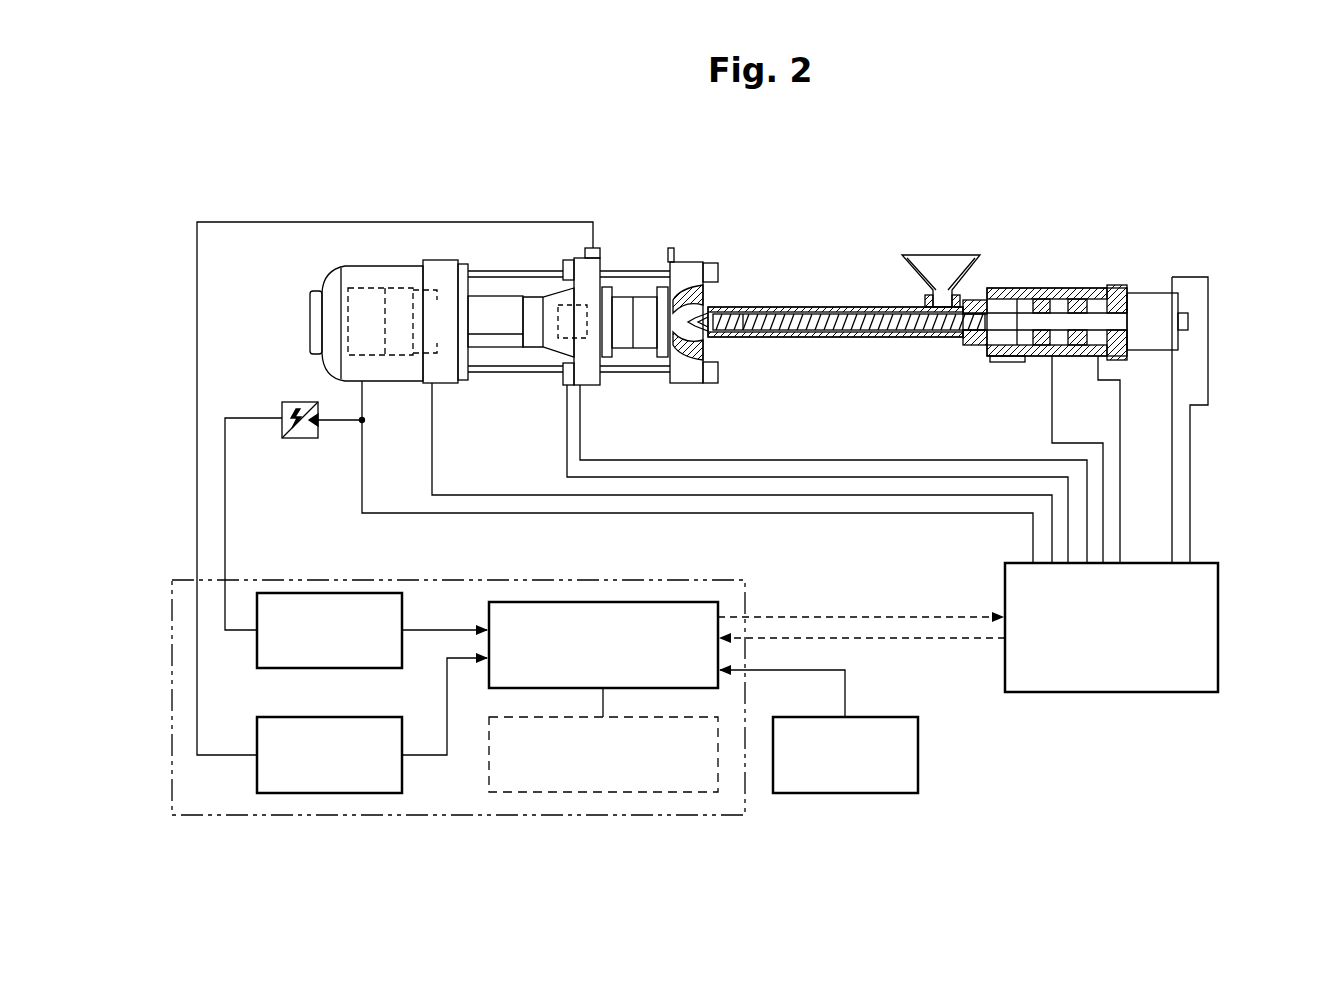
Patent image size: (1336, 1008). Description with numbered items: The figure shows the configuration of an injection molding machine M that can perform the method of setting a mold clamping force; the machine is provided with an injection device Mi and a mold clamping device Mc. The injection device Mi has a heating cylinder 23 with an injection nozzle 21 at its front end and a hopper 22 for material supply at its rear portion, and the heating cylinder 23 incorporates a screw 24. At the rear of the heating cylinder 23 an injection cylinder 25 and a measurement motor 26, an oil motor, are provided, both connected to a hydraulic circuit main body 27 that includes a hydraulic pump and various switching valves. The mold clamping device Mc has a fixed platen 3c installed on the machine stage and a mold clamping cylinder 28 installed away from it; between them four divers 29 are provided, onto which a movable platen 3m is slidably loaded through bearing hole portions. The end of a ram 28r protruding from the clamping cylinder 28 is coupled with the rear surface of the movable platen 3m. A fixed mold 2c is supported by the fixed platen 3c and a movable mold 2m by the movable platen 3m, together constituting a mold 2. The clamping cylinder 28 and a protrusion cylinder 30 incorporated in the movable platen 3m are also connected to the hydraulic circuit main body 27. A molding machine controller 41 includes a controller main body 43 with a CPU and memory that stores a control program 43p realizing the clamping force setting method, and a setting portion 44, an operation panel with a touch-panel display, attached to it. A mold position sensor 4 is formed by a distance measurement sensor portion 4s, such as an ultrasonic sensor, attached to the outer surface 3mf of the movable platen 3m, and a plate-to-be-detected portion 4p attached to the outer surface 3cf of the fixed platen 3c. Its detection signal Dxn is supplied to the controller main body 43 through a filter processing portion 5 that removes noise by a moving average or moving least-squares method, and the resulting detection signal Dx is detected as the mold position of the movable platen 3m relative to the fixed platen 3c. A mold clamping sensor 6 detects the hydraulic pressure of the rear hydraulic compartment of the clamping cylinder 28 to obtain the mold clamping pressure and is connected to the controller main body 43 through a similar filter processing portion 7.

The mold clamping device Mc is at (460, 197).
The mold position sensor 4 is at (635, 203).
The injection molding machine M is at (1210, 242).
The injection device Mi is at (1002, 242).
The mold clamping cylinder 28 is at (377, 265).
The ram 28r is at (490, 343).
The divers 29 is at (477, 263).
The movable platen 3m is at (557, 347).
The protrusion cylinder 30 is at (553, 348).
The outer surface of the movable platen 3mf is at (580, 257).
The distance measurement sensor portion 4s is at (593, 250).
The mold 2 is at (653, 366).
The movable mold 2m is at (625, 357).
The fixed mold 2c is at (660, 357).
The outer surface of the fixed platen 3cf is at (700, 262).
The plate-to-be-detected portion 4p is at (670, 250).
The fixed platen 3c is at (707, 293).
The injection nozzle 21 is at (703, 338).
The heating cylinder 23 is at (808, 340).
The screw 24 is at (860, 307).
The hopper 22 is at (940, 255).
The injection cylinder 25 is at (1073, 287).
The measurement motor 26 is at (1157, 293).
The detection signal Dxn is at (195, 318).
The mold clamping sensor 6 is at (292, 402).
The molding machine controller 41 is at (973, 755).
The filter processing portion 7 is at (331, 593).
The filter processing portion 5 is at (332, 793).
The detection signal Dx is at (445, 737).
The controller main body 43 is at (613, 602).
The control program 43p is at (628, 792).
The setting portion 44 is at (903, 717).
The hydraulic circuit main body 27 is at (1218, 605).